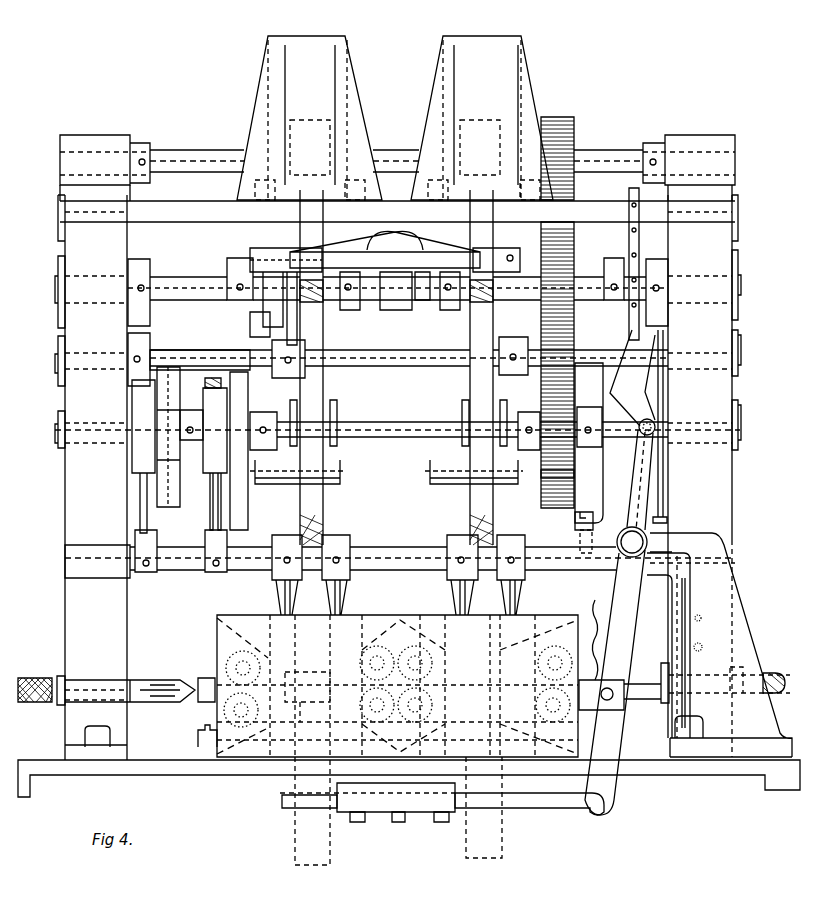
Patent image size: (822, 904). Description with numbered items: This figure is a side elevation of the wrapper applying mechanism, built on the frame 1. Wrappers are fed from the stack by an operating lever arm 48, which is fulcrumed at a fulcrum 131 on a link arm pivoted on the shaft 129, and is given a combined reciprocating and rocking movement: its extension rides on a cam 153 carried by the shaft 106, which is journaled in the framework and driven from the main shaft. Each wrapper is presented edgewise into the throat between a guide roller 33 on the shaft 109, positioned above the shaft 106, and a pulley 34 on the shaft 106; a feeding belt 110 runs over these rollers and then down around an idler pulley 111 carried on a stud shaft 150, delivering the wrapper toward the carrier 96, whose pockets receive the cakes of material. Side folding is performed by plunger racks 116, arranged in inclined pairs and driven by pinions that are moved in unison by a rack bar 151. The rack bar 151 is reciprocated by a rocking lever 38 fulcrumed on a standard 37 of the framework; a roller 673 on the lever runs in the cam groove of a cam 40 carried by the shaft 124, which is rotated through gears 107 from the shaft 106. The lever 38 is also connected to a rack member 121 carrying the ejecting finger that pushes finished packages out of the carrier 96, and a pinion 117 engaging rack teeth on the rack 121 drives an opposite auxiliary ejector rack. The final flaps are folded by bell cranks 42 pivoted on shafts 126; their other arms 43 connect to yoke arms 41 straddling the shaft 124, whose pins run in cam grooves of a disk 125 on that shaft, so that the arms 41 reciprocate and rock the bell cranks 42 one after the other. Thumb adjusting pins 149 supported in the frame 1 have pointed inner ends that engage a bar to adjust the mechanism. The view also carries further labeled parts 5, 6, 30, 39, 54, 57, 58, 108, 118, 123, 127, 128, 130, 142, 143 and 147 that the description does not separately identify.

The frame 1 is at (70, 640).
The base plate 5 is at (158, 768).
The cross bar 6 is at (192, 210).
The upright standards 30 is at (262, 100).
The guide roller 33 is at (628, 236).
The pulley 34 is at (330, 341).
The standard 37 is at (762, 710).
The rocking lever 38 is at (612, 740).
The bracket 39 is at (345, 786).
The cam 40 is at (603, 482).
The arms 41 is at (190, 457).
The bell cranks 42 is at (338, 598).
The arms of bell cranks 43 is at (165, 585).
The operating lever arm 48 is at (430, 254).
The shaft bearing 54 is at (626, 702).
The slide plate 57 is at (168, 437).
The stop block 58 is at (573, 532).
The carrier 96 is at (516, 838).
The shaft 106 is at (190, 282).
The gears 107 is at (574, 260).
The gear rack 108 is at (576, 130).
The shaft 109 is at (208, 155).
The feeding belt 110 is at (326, 386).
The guide or idler pulley 111 is at (312, 712).
The tucking plunger racks 116 is at (398, 625).
The pinion 117 is at (222, 665).
The gear 118 is at (240, 707).
The rack member 121 is at (282, 812).
The bracket feet 123 is at (430, 815).
The shaft 124 is at (58, 448).
The disk 125 is at (235, 356).
The shafts 126 is at (256, 580).
The bracket arm 127 is at (656, 578).
The block 128 is at (262, 260).
The shaft 129 is at (416, 368).
The bearing 130 is at (150, 343).
The fulcrum 131 is at (522, 248).
The brackets 142 is at (338, 470).
The collars 143 is at (340, 411).
The knurled nut 147 is at (205, 385).
The thumb adjusting pins 149 is at (50, 708).
The stud shaft 150 is at (200, 705).
The rack bar 151 is at (598, 615).
The cam 153 is at (402, 312).
The roller 673 is at (655, 424).